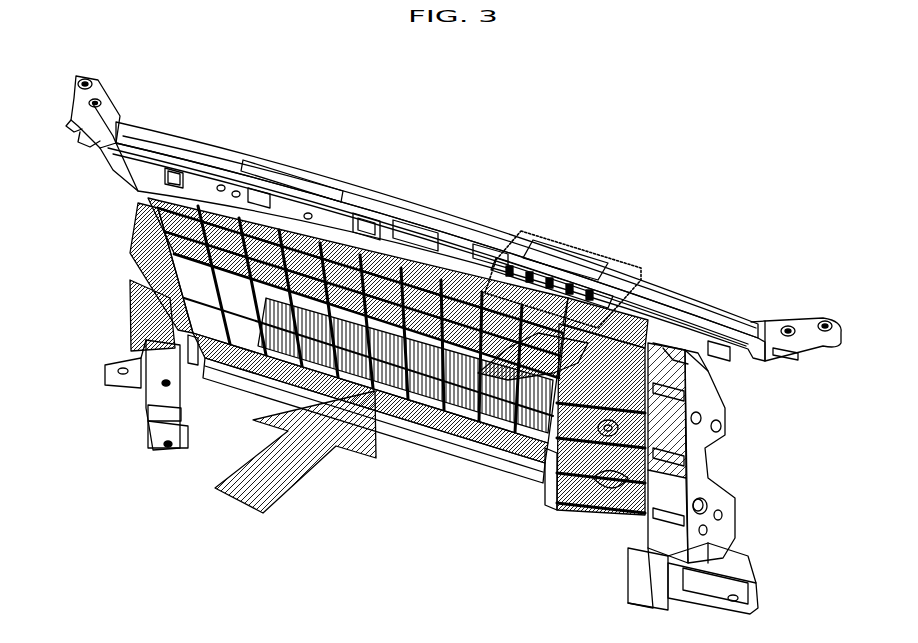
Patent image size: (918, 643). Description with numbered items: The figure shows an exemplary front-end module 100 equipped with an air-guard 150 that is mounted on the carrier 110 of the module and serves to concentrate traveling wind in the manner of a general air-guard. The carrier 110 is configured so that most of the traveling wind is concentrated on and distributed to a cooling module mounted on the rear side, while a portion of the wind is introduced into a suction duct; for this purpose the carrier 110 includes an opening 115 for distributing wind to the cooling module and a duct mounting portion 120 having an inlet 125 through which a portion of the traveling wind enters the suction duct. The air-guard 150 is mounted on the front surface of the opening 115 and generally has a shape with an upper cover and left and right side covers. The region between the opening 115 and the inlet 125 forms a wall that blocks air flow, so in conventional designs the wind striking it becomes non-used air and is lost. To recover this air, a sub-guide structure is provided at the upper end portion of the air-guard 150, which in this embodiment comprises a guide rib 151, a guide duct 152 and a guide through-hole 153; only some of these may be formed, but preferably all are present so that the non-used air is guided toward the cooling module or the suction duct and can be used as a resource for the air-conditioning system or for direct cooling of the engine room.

The front-end module 100 is at (494, 136).
The carrier 110 is at (690, 300).
The opening 115 is at (246, 350).
The duct mounting portion 120 is at (580, 242).
The inlet 125 is at (497, 247).
The air-guard 150 is at (243, 213).
The guide rib 151 is at (505, 397).
The guide duct 152 is at (437, 390).
The guide through-hole 153 is at (353, 247).